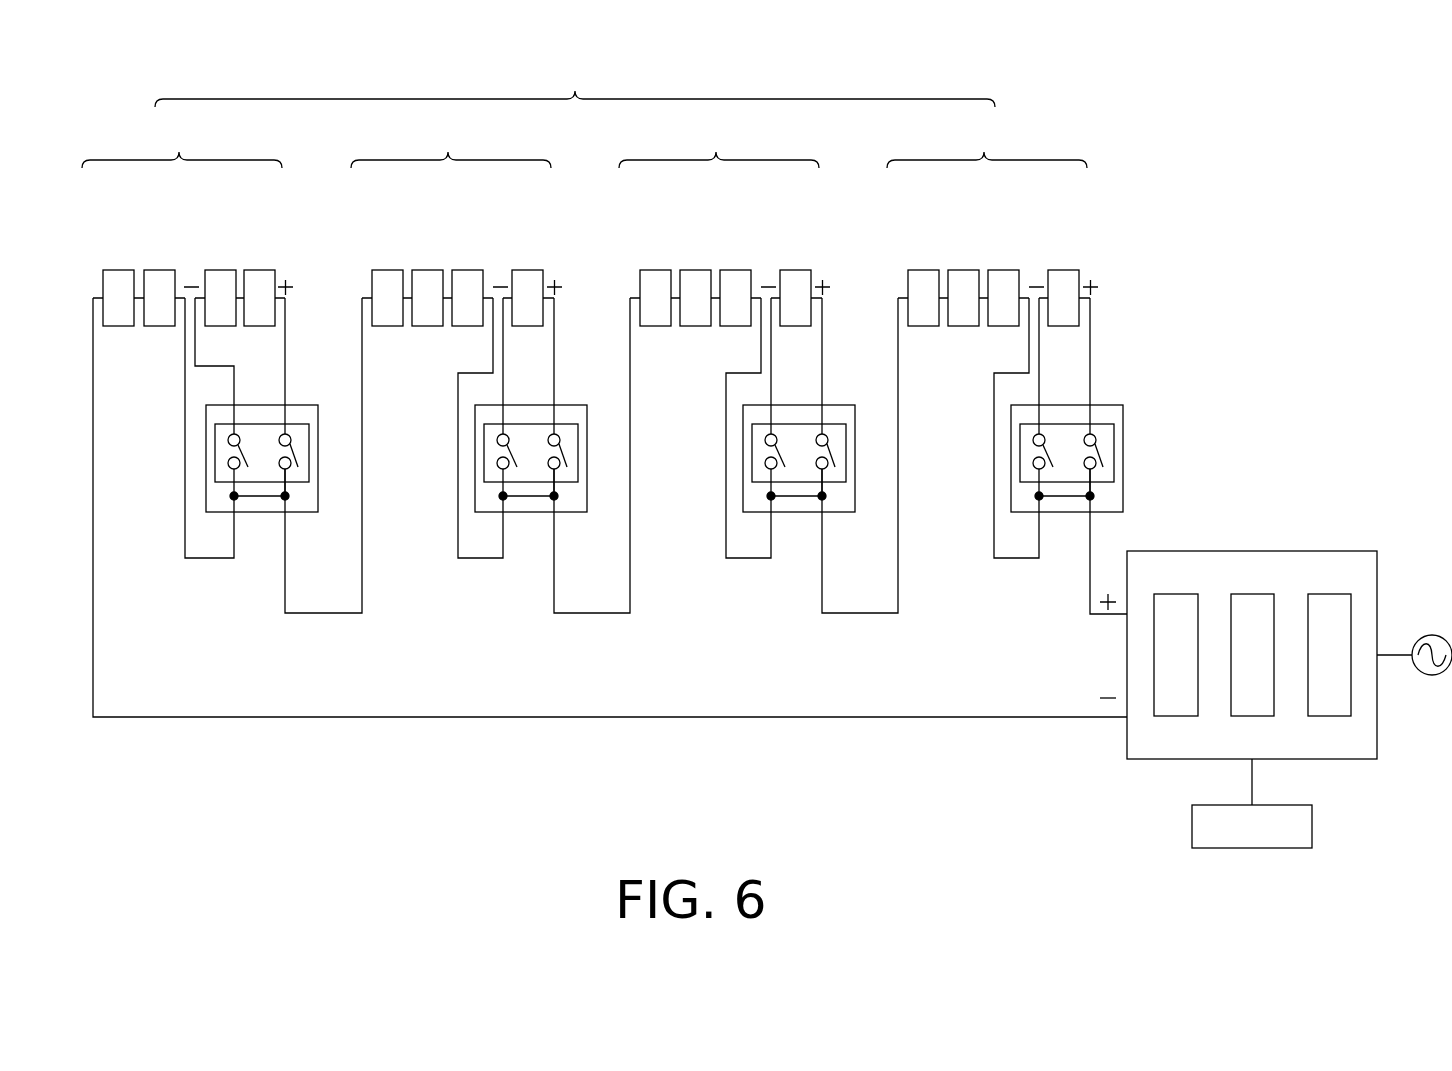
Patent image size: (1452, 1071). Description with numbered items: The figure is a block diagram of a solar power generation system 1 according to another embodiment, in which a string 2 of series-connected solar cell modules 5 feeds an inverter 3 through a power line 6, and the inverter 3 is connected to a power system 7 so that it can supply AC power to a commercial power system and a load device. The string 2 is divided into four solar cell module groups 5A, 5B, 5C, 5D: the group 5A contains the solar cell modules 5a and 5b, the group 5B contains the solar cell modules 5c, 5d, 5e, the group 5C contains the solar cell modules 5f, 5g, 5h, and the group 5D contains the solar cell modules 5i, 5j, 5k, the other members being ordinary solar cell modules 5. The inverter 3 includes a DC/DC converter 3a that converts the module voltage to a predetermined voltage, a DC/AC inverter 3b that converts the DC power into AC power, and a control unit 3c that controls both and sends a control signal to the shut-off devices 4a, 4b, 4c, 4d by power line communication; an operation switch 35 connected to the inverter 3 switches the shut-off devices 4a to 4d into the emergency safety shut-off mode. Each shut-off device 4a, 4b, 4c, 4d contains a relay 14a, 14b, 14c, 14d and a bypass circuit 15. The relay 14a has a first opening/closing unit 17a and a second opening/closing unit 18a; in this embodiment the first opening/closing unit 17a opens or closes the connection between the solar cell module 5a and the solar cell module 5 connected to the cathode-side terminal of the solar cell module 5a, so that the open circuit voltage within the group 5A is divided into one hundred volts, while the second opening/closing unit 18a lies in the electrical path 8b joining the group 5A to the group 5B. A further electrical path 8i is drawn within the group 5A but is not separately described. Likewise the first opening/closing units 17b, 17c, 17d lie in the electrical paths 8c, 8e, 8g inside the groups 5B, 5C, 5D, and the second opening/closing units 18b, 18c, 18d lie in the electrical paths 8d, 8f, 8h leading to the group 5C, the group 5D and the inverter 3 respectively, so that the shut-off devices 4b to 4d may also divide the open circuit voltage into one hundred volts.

The solar power generation system 1 is at (1254, 203).
The string 2 is at (575, 81).
The inverter 3 is at (1365, 546).
The DC/DC converter 3a is at (1177, 594).
The DC/AC inverter 3b is at (1252, 594).
The control unit 3c is at (1330, 594).
The shut-off device 4a is at (204, 503).
The shut-off device 4b is at (473, 503).
The shut-off device 4c is at (741, 503).
The shut-off device 4d is at (1009, 503).
The solar cell module 5 is at (118, 270).
The solar cell module group 5A is at (187, 275).
The solar cell module group 5B is at (456, 275).
The solar cell module group 5C is at (724, 275).
The solar cell module group 5D is at (992, 275).
The solar cell module 5a is at (221, 270).
The solar cell module 5b is at (260, 270).
The solar cell module 5c is at (388, 270).
The solar cell module 5d is at (468, 270).
The solar cell module 5e is at (528, 270).
The solar cell module 5f is at (653, 270).
The solar cell module 5g is at (738, 270).
The solar cell module 5h is at (797, 270).
The solar cell module 5i is at (922, 270).
The solar cell module 5j is at (1005, 270).
The solar cell module 5k is at (1065, 270).
The power line 6 is at (958, 717).
The power system 7 is at (1433, 634).
The electrical path 8b is at (323, 614).
The electrical path 8c is at (482, 558).
The electrical path 8d is at (592, 614).
The electrical path 8e is at (750, 558).
The electrical path 8f is at (860, 614).
The electrical path 8g is at (1018, 558).
The electrical path 8h is at (1106, 622).
The wiring line 8i is at (213, 558).
The relay 14a is at (204, 432).
The relay 14b is at (473, 432).
The relay 14c is at (741, 432).
The relay 14d is at (1009, 432).
The bypass circuit 15 is at (257, 498).
The first opening/closing unit 17a is at (233, 447).
The first opening/closing unit 17b is at (502, 447).
The first opening/closing unit 17c is at (770, 447).
The first opening/closing unit 17d is at (1038, 447).
The second opening/closing unit 18a is at (297, 446).
The second opening/closing unit 18b is at (566, 446).
The second opening/closing unit 18c is at (834, 446).
The second opening/closing unit 18d is at (1102, 446).
The operation switch 35 is at (1312, 825).